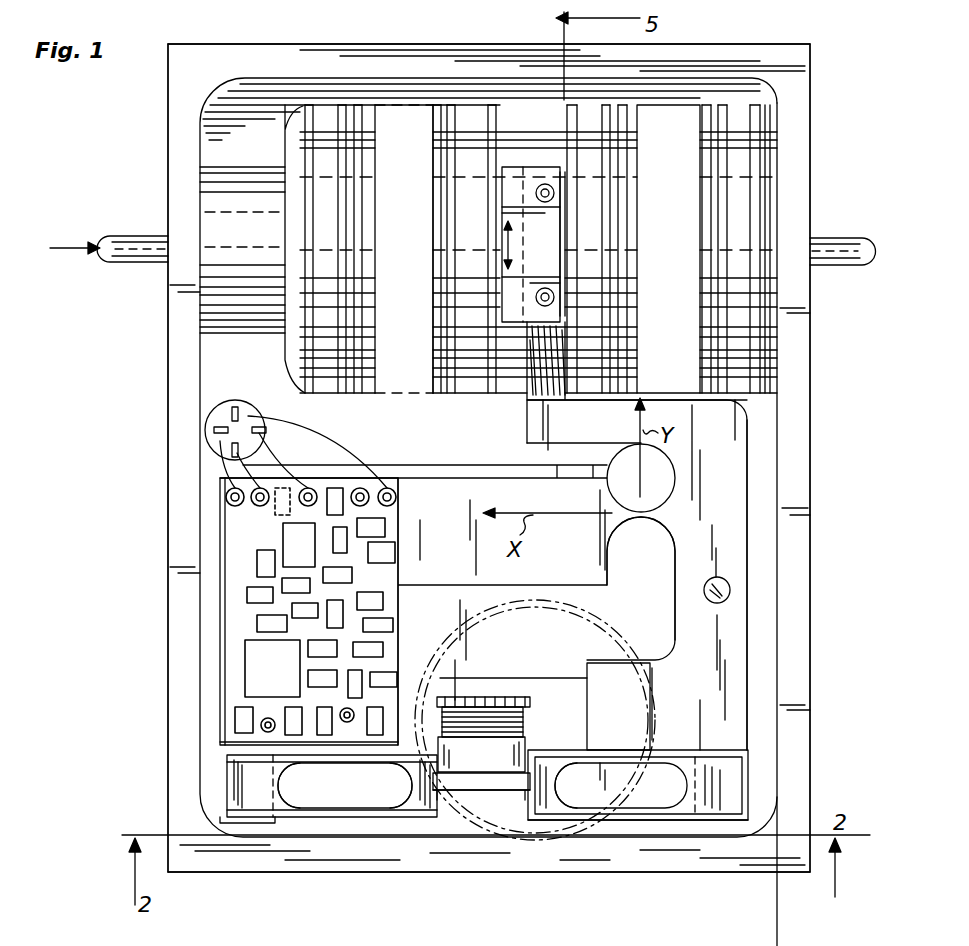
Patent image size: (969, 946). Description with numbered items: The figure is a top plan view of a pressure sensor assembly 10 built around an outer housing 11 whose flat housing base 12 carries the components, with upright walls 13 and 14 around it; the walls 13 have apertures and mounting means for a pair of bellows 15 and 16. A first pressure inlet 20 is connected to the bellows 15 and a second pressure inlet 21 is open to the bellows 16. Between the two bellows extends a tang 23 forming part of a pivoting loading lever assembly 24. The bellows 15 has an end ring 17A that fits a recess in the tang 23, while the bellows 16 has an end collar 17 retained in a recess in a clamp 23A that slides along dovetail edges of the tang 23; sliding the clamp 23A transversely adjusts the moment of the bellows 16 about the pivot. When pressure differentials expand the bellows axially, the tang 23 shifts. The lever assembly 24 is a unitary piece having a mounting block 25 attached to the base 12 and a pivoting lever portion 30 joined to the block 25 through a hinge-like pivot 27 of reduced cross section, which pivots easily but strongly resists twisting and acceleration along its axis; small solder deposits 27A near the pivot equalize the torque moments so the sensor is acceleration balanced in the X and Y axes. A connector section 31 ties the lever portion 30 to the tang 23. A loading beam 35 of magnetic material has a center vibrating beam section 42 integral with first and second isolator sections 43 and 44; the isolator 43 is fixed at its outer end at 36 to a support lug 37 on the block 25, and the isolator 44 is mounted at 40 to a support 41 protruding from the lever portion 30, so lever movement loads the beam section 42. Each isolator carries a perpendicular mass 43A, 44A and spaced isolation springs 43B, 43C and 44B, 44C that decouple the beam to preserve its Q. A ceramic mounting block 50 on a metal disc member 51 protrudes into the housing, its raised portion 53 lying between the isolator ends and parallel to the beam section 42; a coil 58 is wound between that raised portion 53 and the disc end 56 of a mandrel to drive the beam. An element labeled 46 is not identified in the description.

The sensor assembly 10 is at (842, 509).
The outer housing 11 is at (800, 666).
The housing base 12 is at (223, 111).
The upright walls 13 is at (190, 577).
The upright walls 14 is at (387, 55).
The bellows 15 is at (676, 182).
The bellows 16 is at (412, 190).
The end collar 17 is at (503, 198).
The end ring 17A is at (567, 231).
The first pressure inlet 20 is at (855, 252).
The second pressure inlet 21 is at (152, 258).
The tang 23 is at (537, 375).
The clamp 23A is at (531, 245).
The loading lever assembly 24 is at (752, 571).
The mounting block 25 is at (567, 542).
The hinge-like pivot 27 is at (645, 515).
The balancing material deposit 27A is at (730, 598).
The pivoting lever portion 30 is at (733, 465).
The connector section 31 is at (595, 430).
The loading beam 35 is at (351, 818).
The mounting of isolator section 43 36 is at (257, 813).
The support lug 37 is at (225, 770).
The mounting of isolator section 44 40 is at (713, 822).
The support 41 is at (752, 780).
The vibrating beam section 42 is at (487, 797).
The first isolator section 43 is at (422, 818).
The mass 43A is at (423, 799).
The isolation spring 43B is at (350, 757).
The isolation spring 43C is at (292, 817).
The second isolator section 44 is at (607, 807).
The mass 44A is at (537, 807).
The isolation spring 44B is at (604, 772).
The isolation spring 44C is at (655, 808).
The stop member 46 is at (660, 688).
The ceramic mounting block 50 is at (567, 712).
The disc member 51 is at (605, 652).
The raised portion 53 is at (493, 771).
The disc end 56 is at (498, 705).
The coil 58 is at (466, 707).